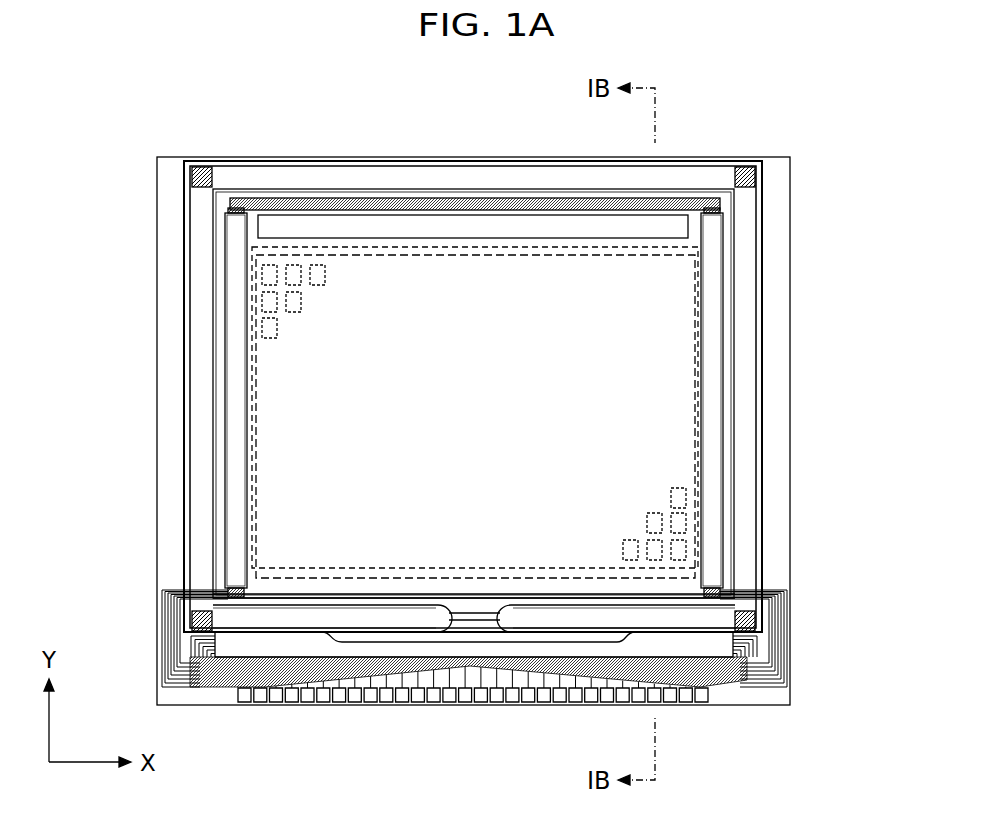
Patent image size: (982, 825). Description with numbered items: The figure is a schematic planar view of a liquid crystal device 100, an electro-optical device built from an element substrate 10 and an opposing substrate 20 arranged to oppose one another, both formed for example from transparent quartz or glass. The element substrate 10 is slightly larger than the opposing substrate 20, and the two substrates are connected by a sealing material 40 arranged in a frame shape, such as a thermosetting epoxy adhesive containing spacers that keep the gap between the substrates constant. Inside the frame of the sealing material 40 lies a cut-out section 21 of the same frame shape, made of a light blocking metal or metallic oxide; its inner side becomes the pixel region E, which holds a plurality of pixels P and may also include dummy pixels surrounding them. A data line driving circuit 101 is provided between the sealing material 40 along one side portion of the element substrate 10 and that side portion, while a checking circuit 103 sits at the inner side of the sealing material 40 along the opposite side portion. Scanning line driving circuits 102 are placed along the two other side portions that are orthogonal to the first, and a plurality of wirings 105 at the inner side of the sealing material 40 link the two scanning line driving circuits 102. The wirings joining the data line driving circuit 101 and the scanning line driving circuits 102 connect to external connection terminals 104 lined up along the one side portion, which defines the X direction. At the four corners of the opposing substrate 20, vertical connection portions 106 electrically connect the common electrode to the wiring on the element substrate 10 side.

The liquid crystal device 100 is at (783, 119).
The element substrate 10 is at (278, 156).
The opposing substrate 20 is at (379, 164).
The sealing material 40 is at (745, 337).
The wirings 105 is at (433, 197).
The checking circuit 103 is at (517, 214).
The vertical connection portion 106 is at (192, 177).
The scanning line driving circuit 102 is at (233, 372).
The pixel P is at (278, 332).
The pixel region E is at (695, 438).
The cut-out section 21 is at (340, 593).
The data line driving circuit 101 is at (232, 644).
The external connection terminal 104 is at (338, 703).